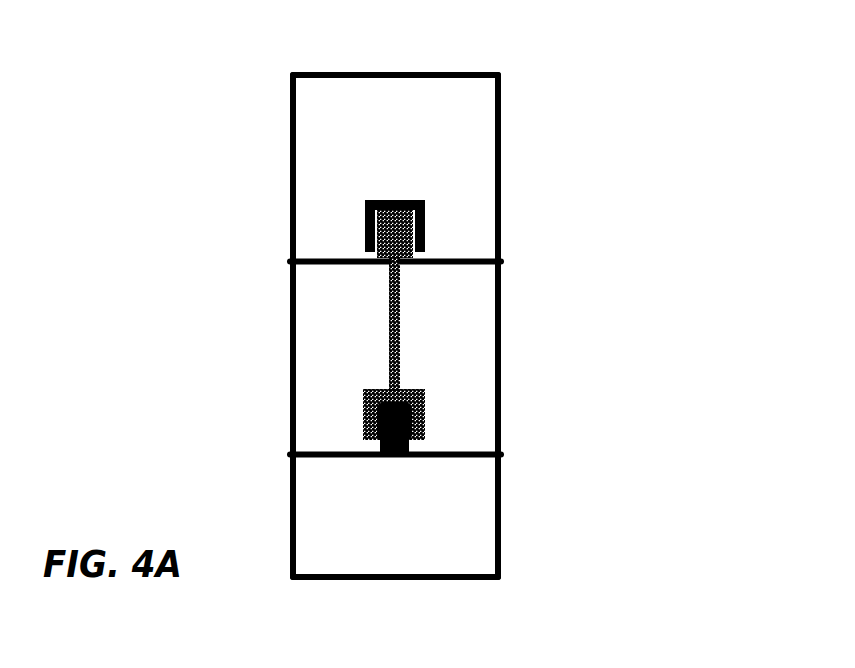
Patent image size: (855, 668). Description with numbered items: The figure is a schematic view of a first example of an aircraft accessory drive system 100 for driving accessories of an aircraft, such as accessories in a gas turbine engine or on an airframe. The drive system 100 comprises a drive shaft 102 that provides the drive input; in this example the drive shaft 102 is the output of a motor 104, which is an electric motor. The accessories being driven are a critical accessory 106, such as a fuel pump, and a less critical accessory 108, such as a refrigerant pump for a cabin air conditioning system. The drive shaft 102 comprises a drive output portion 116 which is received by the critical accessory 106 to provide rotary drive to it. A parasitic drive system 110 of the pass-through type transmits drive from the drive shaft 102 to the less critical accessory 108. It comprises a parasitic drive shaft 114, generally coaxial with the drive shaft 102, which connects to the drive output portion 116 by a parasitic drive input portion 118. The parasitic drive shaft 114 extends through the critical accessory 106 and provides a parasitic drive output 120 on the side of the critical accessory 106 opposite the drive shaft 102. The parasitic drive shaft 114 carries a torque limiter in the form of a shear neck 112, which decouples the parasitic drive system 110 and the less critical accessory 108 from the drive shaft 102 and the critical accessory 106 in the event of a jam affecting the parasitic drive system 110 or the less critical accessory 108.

The aircraft accessory drive system 100 is at (552, 94).
The drive shaft 102 is at (408, 445).
The motor 104 is at (467, 547).
The critical accessory 106 is at (305, 373).
The less critical accessory 108 is at (355, 110).
The parasitic drive system 110 is at (388, 310).
The shear neck 112 is at (402, 257).
The parasitic drive shaft 114 is at (401, 345).
The drive output portion 116 is at (412, 420).
The parasitic drive input portion 118 is at (377, 404).
The parasitic drive output 120 is at (393, 227).